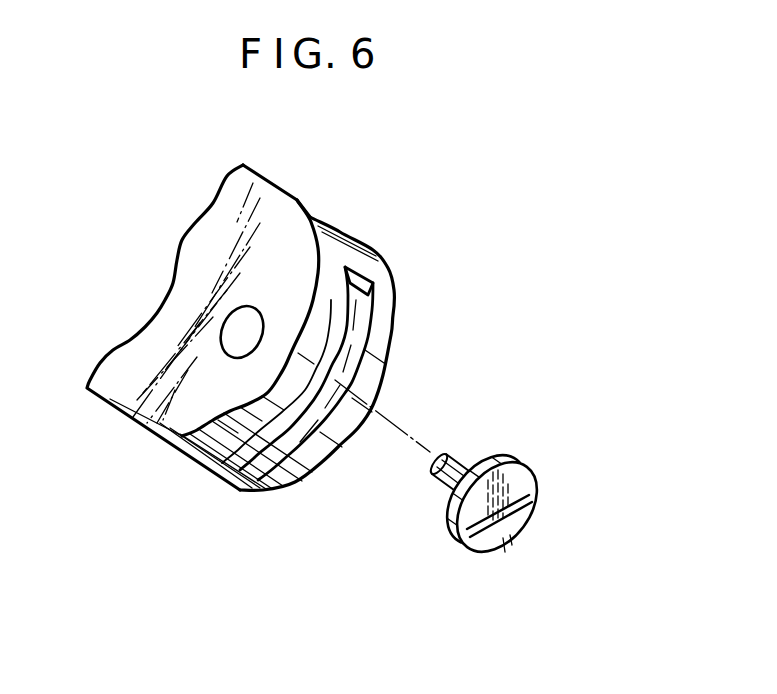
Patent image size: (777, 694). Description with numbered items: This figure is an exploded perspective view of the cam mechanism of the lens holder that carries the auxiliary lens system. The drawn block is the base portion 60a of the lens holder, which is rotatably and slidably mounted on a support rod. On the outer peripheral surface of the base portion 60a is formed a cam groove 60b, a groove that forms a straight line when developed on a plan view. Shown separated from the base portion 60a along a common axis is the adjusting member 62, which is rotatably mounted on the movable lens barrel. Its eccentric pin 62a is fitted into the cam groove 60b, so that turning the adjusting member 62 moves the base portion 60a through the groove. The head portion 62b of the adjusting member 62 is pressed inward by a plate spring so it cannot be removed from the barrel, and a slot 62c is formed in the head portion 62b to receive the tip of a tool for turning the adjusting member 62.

The base portion 60a is at (290, 216).
The cam groove 60b is at (340, 327).
The adjusting member 62 is at (543, 469).
The eccentric pin 62a is at (450, 452).
The head portion 62b is at (492, 543).
The slot 62c is at (530, 498).